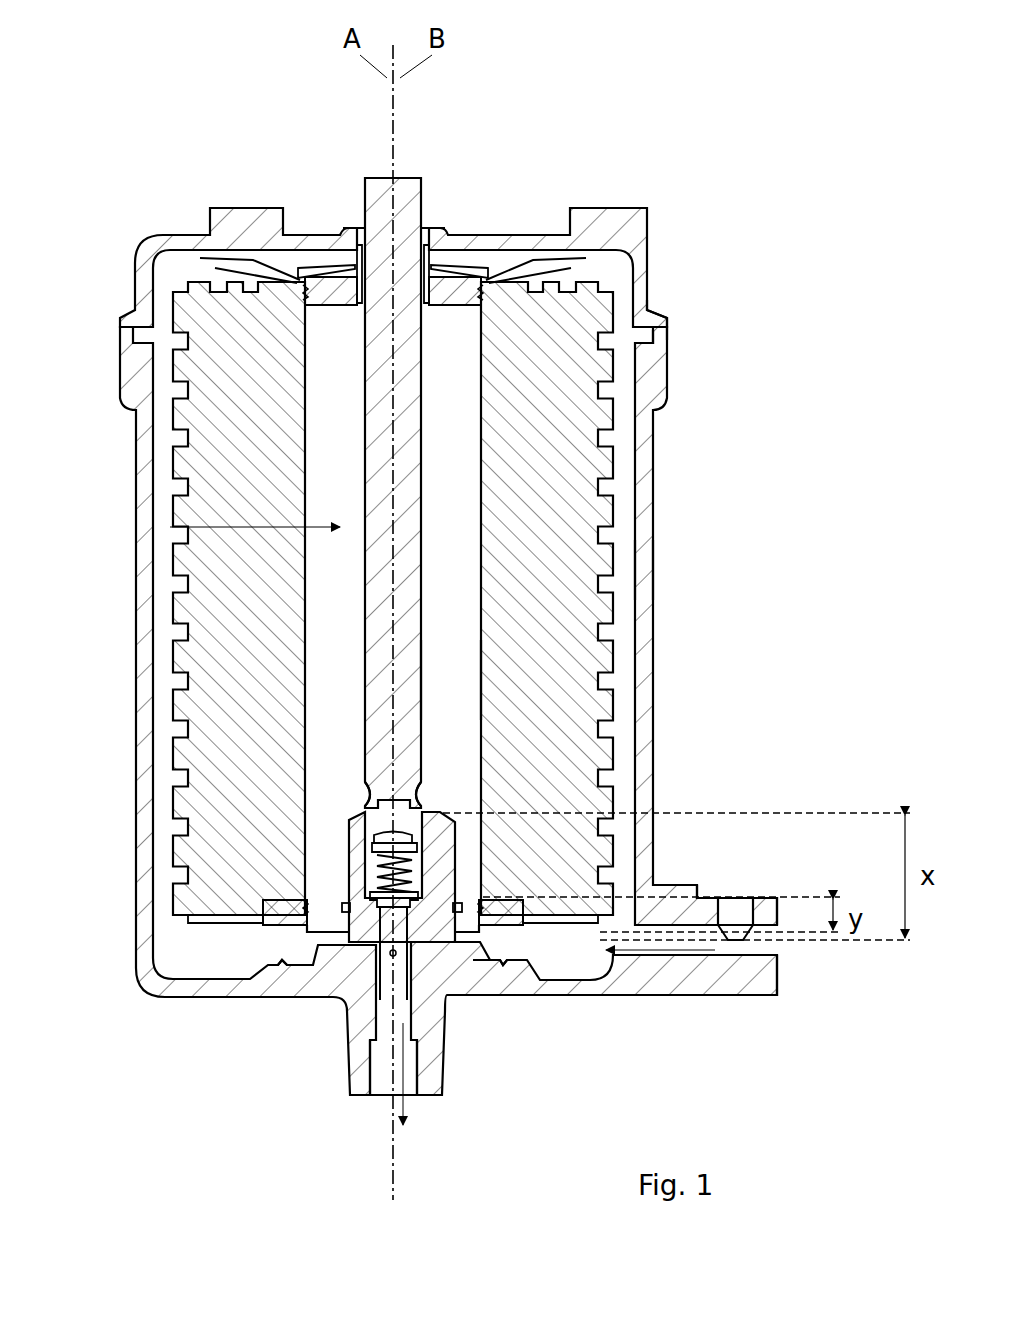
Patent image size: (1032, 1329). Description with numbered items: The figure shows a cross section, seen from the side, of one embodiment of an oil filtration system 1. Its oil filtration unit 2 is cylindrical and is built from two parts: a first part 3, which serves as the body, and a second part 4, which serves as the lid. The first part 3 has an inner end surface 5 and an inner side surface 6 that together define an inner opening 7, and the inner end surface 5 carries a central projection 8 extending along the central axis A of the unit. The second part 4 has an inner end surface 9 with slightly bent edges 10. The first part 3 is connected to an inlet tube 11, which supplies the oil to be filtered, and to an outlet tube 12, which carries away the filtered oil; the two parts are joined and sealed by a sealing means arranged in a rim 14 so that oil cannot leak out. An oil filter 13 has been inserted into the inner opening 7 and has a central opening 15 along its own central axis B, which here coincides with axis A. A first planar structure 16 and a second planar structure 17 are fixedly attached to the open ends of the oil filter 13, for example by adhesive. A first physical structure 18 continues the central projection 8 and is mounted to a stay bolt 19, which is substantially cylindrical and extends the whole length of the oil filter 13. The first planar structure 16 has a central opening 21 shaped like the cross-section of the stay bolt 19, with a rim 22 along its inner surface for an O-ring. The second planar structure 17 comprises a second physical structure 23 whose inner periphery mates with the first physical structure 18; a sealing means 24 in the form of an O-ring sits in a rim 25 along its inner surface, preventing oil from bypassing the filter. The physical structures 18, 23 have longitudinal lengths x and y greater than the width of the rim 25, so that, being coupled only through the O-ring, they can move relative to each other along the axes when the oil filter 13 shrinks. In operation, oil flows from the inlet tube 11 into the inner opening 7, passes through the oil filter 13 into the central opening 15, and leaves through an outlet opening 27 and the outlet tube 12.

The oil filtration system 1 is at (190, 93).
The oil filtration unit 2 is at (657, 352).
The first part 3 is at (655, 492).
The second part 4 is at (545, 210).
The inner end surface 5 is at (600, 982).
The inner side surface 6 is at (618, 565).
The inner opening 7 is at (165, 768).
The central projection 8 is at (352, 920).
The inner end surface 9 is at (590, 268).
The slightly bent edges 10 is at (170, 275).
The inlet tube 11 is at (787, 992).
The outlet tube 12 is at (375, 1077).
The oil filter 13 is at (555, 450).
The rim 14 is at (660, 330).
The central opening 15 is at (440, 678).
The first planar structure 16 is at (458, 252).
The second planar structure 17 is at (462, 910).
The first physical structure 18 is at (355, 857).
The stay bolt 19 is at (377, 588).
The central opening 21 is at (420, 258).
The rim 22 is at (337, 250).
The second physical structure 23 is at (327, 917).
The sealing means 24 is at (455, 935).
The rim 25 is at (302, 928).
The outlet opening 27 is at (412, 790).